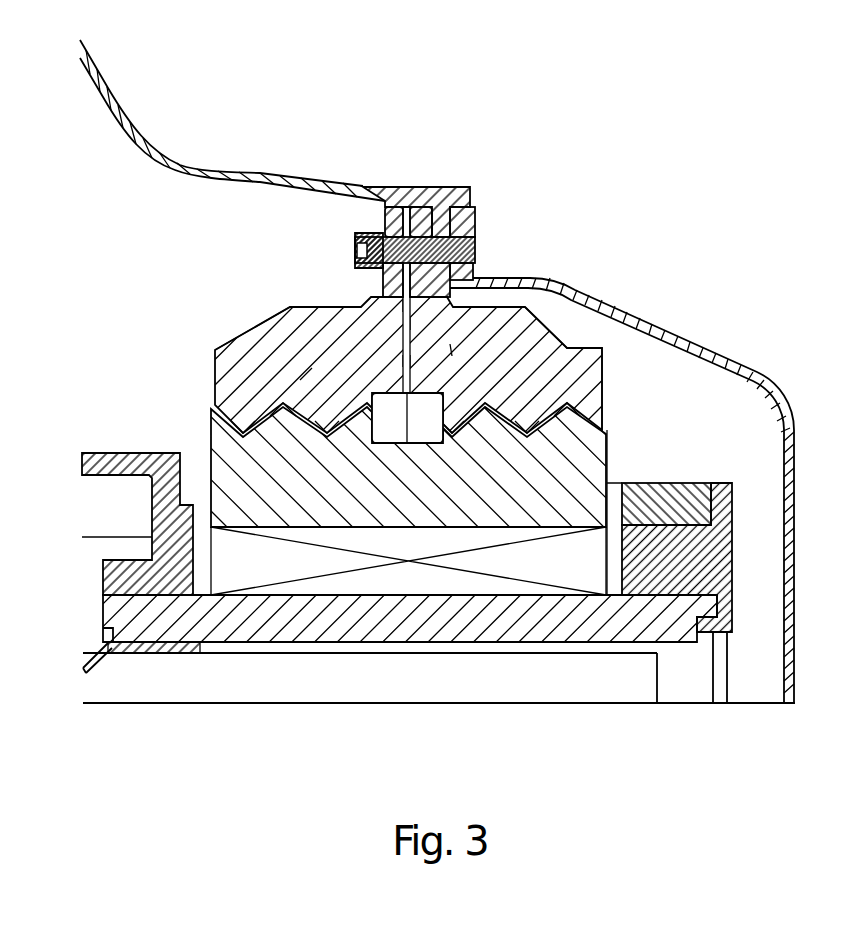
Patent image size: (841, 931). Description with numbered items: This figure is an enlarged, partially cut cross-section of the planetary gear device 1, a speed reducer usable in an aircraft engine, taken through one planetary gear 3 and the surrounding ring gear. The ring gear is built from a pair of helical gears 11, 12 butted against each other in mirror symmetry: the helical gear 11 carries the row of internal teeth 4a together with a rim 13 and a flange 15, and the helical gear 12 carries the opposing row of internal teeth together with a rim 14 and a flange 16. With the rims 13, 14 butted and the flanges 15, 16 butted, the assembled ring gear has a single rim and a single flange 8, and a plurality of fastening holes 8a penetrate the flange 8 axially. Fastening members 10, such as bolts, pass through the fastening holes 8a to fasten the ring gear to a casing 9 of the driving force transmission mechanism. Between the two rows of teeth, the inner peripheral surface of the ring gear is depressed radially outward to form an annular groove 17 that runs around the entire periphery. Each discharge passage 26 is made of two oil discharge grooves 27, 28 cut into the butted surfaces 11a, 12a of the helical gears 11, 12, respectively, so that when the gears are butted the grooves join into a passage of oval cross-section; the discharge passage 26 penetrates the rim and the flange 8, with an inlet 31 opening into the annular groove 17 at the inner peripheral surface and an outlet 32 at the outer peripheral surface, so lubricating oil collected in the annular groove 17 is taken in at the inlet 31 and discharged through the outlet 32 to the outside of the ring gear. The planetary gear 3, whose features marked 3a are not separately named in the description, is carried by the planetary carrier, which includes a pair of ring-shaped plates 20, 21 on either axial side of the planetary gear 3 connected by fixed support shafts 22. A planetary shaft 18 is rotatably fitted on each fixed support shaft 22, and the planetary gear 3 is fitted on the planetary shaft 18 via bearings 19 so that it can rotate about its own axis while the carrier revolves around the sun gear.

The planetary gear device 1 is at (543, 307).
The planetary gear 3 is at (607, 461).
The protrusion of lower block 3a is at (281, 403).
The internal teeth 4a is at (244, 437).
The flange 8 is at (415, 250).
The fastening hole 8a is at (377, 233).
The casing 9 is at (437, 193).
The fastening member 10 is at (473, 210).
The helical gear 11 is at (245, 350).
The butted surface 11a is at (401, 360).
The helical gear 12 is at (592, 367).
The butted surface 12a is at (452, 351).
The rim 13 is at (277, 327).
The rim 14 is at (573, 327).
The flange 15 is at (383, 288).
The flange 16 is at (476, 237).
The annular groove 17 is at (303, 378).
The planetary shaft 18 is at (523, 607).
The bearing 19 is at (395, 545).
The plate 20 is at (165, 515).
The plate 21 is at (731, 548).
The fixed support shaft 22 is at (427, 704).
The discharge passage 26 is at (412, 362).
The oil discharge groove 27 is at (400, 306).
The oil discharge groove 28 is at (412, 324).
The inlet 31 is at (405, 444).
The outlet 32 is at (405, 207).